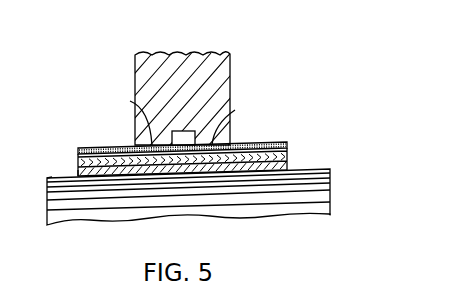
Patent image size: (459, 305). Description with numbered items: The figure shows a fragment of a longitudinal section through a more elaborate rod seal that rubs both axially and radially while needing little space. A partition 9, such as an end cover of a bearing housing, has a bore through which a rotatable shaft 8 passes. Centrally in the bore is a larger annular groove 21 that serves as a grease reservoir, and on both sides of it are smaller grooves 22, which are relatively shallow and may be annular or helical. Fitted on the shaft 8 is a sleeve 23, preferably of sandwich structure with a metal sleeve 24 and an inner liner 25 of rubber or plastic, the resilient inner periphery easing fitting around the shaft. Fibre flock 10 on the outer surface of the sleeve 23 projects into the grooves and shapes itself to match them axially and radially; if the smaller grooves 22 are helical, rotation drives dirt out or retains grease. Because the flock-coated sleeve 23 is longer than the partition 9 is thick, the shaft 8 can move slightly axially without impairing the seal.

The rotatable shaft 8 is at (320, 187).
The partition 9 is at (224, 62).
The fibre flock 10 is at (265, 141).
The annular groove 21 is at (179, 131).
The smaller grooves 22 is at (130, 101).
The sleeve 23 is at (290, 164).
The metal sleeve 24 is at (52, 177).
The inner liner 25 is at (78, 174).